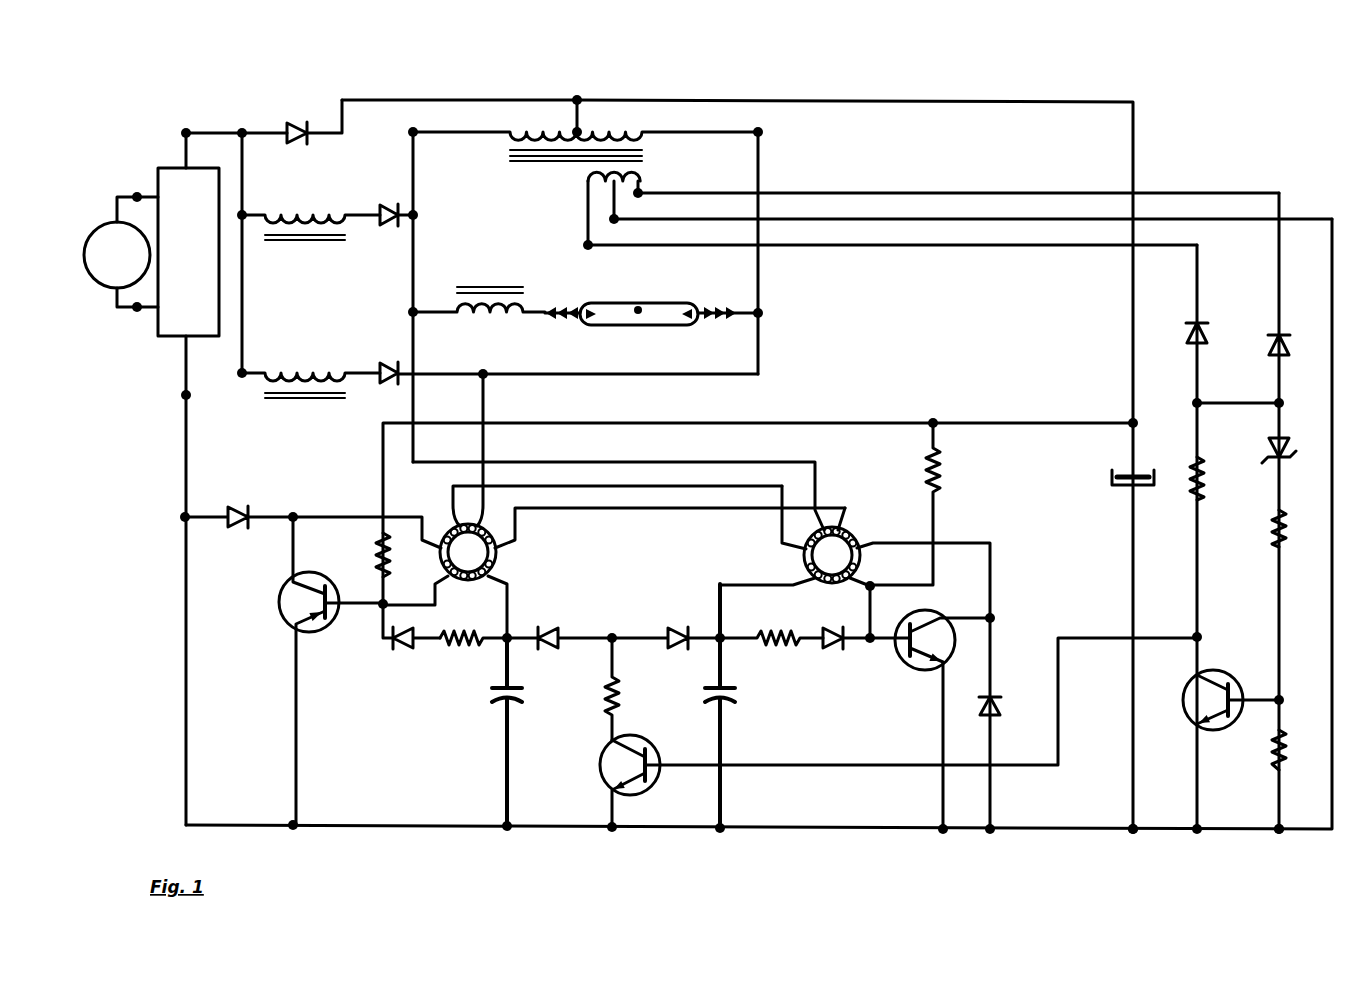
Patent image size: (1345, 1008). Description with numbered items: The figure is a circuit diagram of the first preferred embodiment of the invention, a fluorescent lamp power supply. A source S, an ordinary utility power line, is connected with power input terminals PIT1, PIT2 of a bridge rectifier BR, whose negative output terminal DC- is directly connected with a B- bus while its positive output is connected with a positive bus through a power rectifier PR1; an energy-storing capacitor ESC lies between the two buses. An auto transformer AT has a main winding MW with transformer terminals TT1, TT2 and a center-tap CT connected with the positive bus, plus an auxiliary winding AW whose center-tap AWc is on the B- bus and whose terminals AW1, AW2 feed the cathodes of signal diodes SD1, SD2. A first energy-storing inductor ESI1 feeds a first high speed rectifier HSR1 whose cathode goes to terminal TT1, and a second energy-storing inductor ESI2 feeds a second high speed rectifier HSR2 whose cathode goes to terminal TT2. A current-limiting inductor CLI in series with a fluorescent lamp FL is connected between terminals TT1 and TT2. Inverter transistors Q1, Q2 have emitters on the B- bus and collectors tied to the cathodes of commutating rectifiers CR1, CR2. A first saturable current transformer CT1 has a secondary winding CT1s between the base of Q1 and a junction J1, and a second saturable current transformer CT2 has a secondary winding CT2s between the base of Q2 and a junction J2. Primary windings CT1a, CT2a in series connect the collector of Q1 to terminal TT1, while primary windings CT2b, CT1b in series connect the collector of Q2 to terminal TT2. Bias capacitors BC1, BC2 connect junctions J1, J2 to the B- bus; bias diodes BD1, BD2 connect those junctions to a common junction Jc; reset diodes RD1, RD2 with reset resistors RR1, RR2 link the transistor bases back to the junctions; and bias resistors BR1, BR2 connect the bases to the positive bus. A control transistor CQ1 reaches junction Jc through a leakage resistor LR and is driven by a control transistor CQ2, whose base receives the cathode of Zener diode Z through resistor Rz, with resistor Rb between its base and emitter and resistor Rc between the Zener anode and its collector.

The source S is at (121, 252).
The power input terminal PIT1 is at (140, 190).
The power input terminal PIT2 is at (137, 312).
The bridge rectifier BR is at (178, 337).
The DC− terminal DC- is at (183, 395).
The power rectifier PR1 is at (302, 140).
The B− bus B- is at (828, 829).
The first energy-storing inductor ESI1 is at (318, 242).
The first high speed rectifier HSR1 is at (390, 228).
The second energy-storing inductor ESI2 is at (308, 402).
The second high speed rectifier HSR2 is at (392, 362).
The transformer terminal TT1 is at (416, 138).
The transformer terminal TT2 is at (756, 140).
The center-tap CT is at (580, 125).
The main winding MW is at (550, 128).
The auto transformer AT is at (540, 165).
The auxiliary winding AW is at (586, 184).
The terminal AW1 is at (585, 250).
The terminal AW2 is at (642, 188).
The center-tap AWc is at (610, 219).
The current-limiting inductor CLI is at (490, 285).
The fluorescent lamp FL is at (635, 327).
The second bias resistor BR2 is at (948, 465).
The first saturable current transformer CT1 is at (498, 553).
The first primary winding CT1a is at (443, 530).
The second primary winding CT1b is at (495, 538).
The secondary winding CT1s is at (472, 582).
The first commutating rectifier CR1 is at (238, 505).
The first bias resistor BR1 is at (375, 557).
The first inverter transistor Q1 is at (292, 618).
The first reset diode RD1 is at (405, 650).
The reset resistor RR1 is at (462, 648).
The junction J1 is at (510, 642).
The first bias diode BD1 is at (550, 625).
The junction Jc is at (612, 633).
The second bias diode BD2 is at (682, 625).
The junction J2 is at (723, 634).
The reset resistor RR2 is at (778, 648).
The second reset diode RD2 is at (838, 650).
The first bias capacitor BC1 is at (524, 692).
The leakage resistor LR is at (622, 690).
The control transistor CQ1 is at (600, 770).
The second bias capacitor BC2 is at (737, 692).
The second saturable current transformer CT2 is at (802, 560).
The first primary winding CT2a is at (820, 520).
The second primary winding CT2b is at (848, 532).
The secondary winding CT2s is at (836, 585).
The second inverter transistor Q2 is at (916, 668).
The second commutating rectifier CR2 is at (1000, 695).
The energy-storing capacitor ESC is at (1120, 487).
The signal diode SD1 is at (1190, 325).
The signal diode SD2 is at (1275, 335).
The Zener diode Z is at (1270, 440).
The resistor Rc is at (1204, 488).
The resistor Rz is at (1275, 530).
The control transistor CQ2 is at (1225, 672).
The resistor Rb is at (1287, 745).